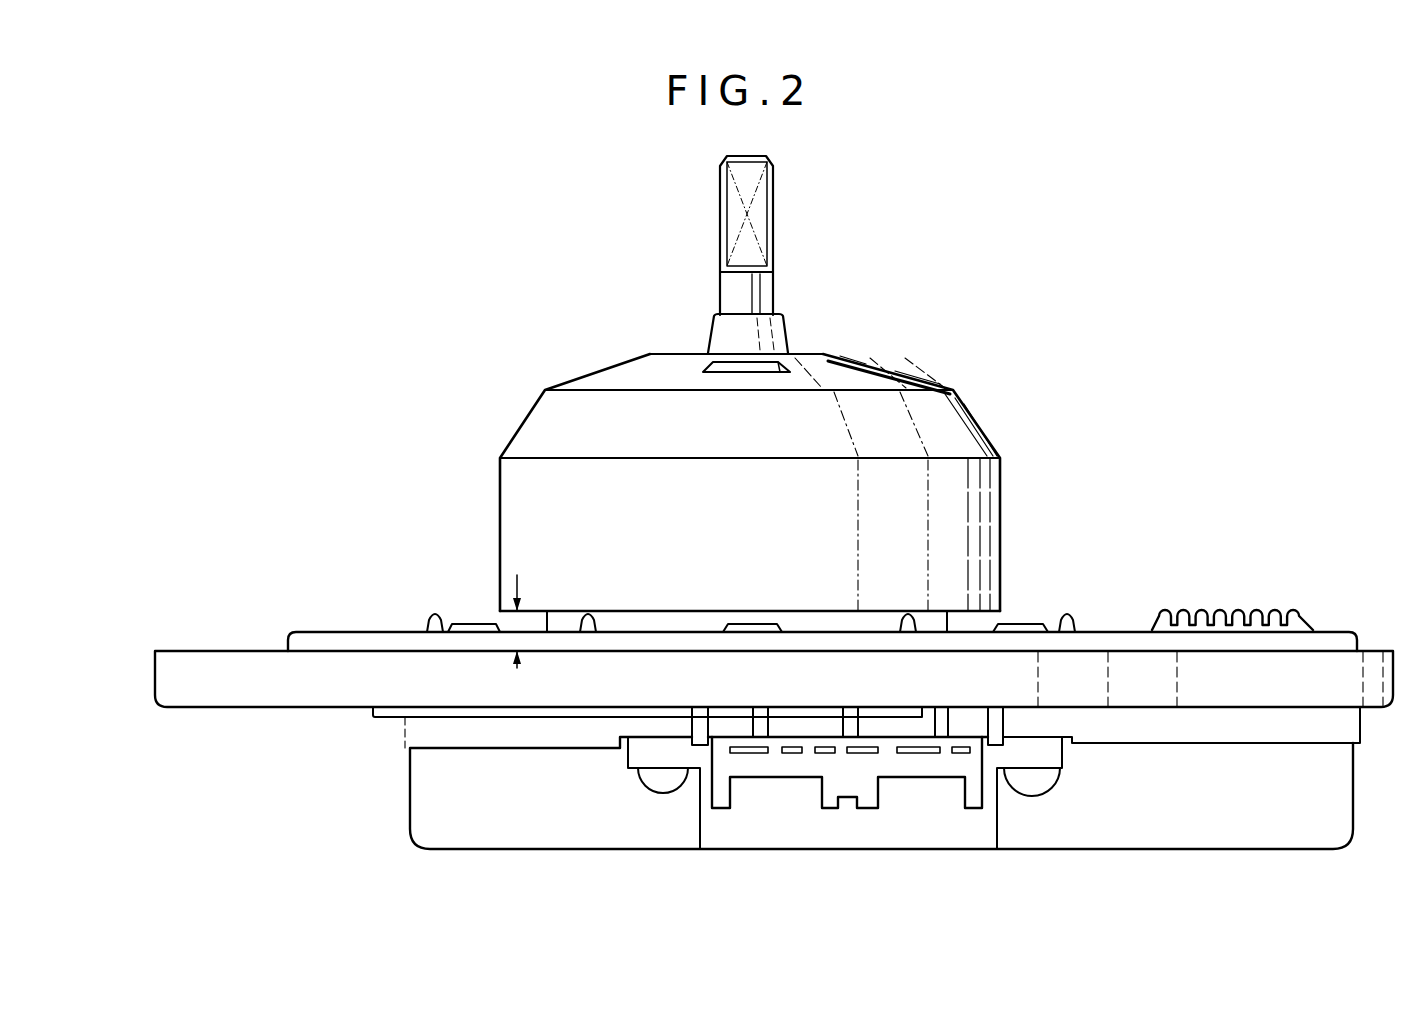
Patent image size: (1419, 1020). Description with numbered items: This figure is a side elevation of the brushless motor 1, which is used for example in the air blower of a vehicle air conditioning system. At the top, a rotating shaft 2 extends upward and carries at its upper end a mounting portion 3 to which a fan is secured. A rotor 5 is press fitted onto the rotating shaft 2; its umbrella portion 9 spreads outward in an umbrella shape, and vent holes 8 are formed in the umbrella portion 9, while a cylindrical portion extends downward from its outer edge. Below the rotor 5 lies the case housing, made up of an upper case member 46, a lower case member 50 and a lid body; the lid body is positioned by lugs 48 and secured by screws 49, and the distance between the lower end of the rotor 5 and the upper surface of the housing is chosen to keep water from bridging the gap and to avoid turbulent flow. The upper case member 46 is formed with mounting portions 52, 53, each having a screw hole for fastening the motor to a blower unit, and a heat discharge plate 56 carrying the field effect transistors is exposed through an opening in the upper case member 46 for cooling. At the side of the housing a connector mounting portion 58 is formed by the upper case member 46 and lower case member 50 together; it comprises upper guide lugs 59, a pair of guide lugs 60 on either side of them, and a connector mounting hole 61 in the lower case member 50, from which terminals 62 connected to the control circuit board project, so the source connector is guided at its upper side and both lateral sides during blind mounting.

The brushless motor 1 is at (1092, 515).
The rotating shaft 2 is at (760, 291).
The mounting portion 3 is at (763, 203).
The rotor 5 is at (979, 418).
The vent holes 8 is at (792, 357).
The umbrella portion 9 is at (890, 370).
The upper case member 46 is at (307, 638).
The lugs 48 is at (430, 618).
The screws 49 is at (455, 625).
The lower case member 50 is at (432, 810).
The mounting portion 52 is at (183, 700).
The mounting portion 53 is at (1088, 687).
The heat discharge plate 56 is at (1302, 615).
The connector mounting portion 58 is at (797, 795).
The upper guide lugs 59 is at (760, 718).
The guide lugs 60 is at (698, 718).
The connector mounting hole 61 is at (918, 758).
The terminals 62 is at (866, 757).